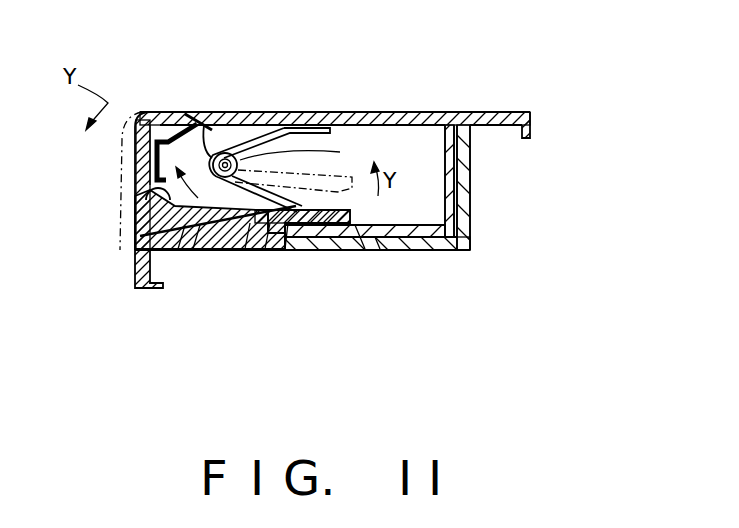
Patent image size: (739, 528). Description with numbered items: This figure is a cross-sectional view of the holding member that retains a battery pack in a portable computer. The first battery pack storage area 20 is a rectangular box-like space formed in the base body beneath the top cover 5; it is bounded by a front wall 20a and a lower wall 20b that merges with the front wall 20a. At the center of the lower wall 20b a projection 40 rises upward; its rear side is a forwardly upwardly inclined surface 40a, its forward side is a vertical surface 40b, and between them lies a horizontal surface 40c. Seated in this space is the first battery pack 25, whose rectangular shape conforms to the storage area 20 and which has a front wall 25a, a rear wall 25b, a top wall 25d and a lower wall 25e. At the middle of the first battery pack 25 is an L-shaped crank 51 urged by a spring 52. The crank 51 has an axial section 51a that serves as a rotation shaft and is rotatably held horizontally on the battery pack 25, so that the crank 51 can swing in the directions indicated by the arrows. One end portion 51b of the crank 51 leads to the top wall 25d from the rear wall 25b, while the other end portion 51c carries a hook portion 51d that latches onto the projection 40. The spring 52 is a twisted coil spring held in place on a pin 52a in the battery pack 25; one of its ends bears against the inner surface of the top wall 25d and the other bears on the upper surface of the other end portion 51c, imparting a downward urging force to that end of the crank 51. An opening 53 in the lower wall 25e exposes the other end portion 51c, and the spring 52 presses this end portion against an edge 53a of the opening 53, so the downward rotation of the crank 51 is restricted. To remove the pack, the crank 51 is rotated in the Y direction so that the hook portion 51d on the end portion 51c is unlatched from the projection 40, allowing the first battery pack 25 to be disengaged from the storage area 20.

The top cover 5 is at (496, 112).
The first battery pack storage area 20 is at (346, 232).
The front wall 20a is at (470, 190).
The lower wall 20b is at (410, 250).
The first battery pack 25 is at (309, 140).
The front wall 25a is at (457, 160).
The rear wall 25b is at (148, 188).
The top wall 25d is at (318, 112).
The lower wall 25e is at (470, 232).
The projection 40 is at (266, 196).
The inclined surface 40a is at (228, 250).
The vertical surface 40b is at (288, 252).
The horizontal surface 40c is at (260, 250).
The crank 51 is at (245, 210).
The axial section 51a is at (137, 233).
The one end portion 51b is at (147, 113).
The other end portion 51c is at (184, 250).
The hook portion 51d is at (312, 250).
The spring 52 is at (303, 123).
The pin 52a is at (340, 152).
The opening 53 is at (166, 286).
The edge 53a is at (365, 250).